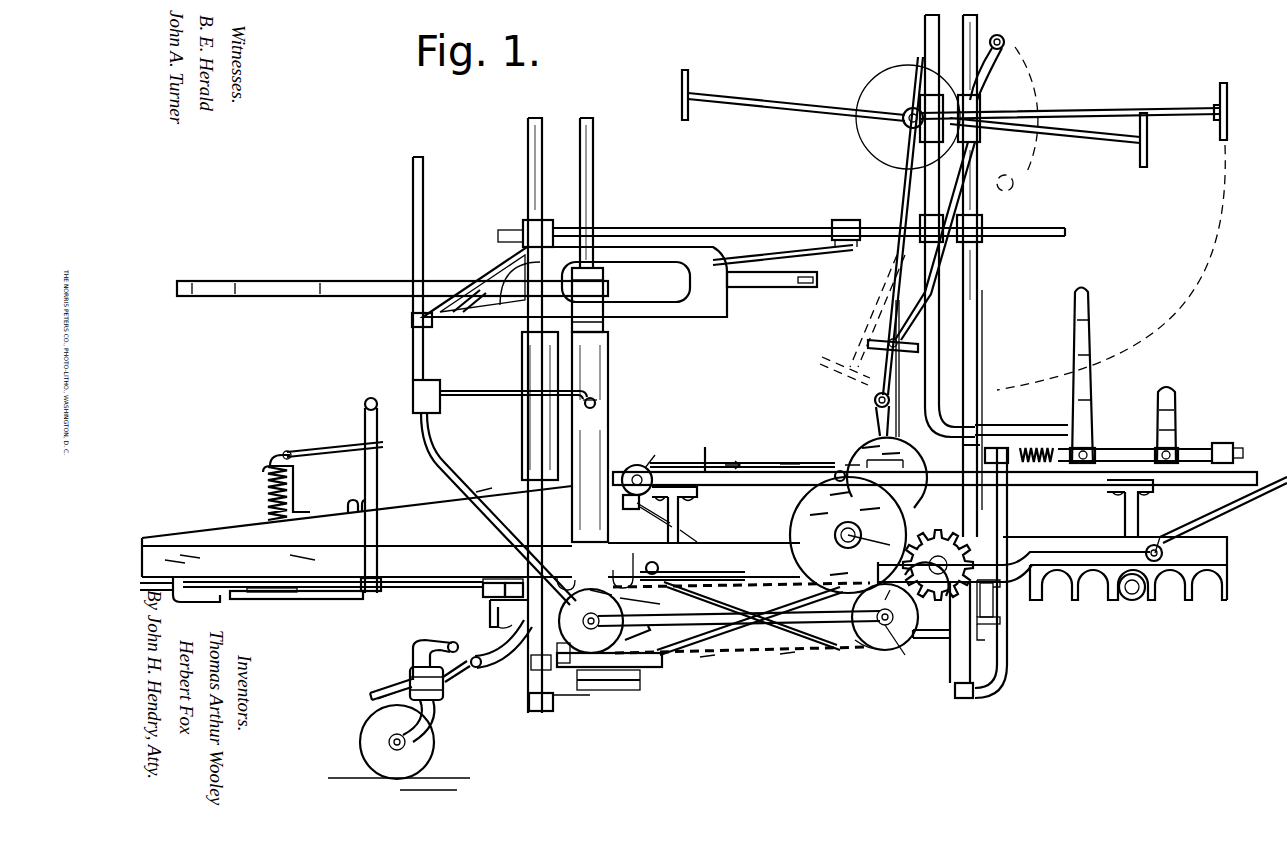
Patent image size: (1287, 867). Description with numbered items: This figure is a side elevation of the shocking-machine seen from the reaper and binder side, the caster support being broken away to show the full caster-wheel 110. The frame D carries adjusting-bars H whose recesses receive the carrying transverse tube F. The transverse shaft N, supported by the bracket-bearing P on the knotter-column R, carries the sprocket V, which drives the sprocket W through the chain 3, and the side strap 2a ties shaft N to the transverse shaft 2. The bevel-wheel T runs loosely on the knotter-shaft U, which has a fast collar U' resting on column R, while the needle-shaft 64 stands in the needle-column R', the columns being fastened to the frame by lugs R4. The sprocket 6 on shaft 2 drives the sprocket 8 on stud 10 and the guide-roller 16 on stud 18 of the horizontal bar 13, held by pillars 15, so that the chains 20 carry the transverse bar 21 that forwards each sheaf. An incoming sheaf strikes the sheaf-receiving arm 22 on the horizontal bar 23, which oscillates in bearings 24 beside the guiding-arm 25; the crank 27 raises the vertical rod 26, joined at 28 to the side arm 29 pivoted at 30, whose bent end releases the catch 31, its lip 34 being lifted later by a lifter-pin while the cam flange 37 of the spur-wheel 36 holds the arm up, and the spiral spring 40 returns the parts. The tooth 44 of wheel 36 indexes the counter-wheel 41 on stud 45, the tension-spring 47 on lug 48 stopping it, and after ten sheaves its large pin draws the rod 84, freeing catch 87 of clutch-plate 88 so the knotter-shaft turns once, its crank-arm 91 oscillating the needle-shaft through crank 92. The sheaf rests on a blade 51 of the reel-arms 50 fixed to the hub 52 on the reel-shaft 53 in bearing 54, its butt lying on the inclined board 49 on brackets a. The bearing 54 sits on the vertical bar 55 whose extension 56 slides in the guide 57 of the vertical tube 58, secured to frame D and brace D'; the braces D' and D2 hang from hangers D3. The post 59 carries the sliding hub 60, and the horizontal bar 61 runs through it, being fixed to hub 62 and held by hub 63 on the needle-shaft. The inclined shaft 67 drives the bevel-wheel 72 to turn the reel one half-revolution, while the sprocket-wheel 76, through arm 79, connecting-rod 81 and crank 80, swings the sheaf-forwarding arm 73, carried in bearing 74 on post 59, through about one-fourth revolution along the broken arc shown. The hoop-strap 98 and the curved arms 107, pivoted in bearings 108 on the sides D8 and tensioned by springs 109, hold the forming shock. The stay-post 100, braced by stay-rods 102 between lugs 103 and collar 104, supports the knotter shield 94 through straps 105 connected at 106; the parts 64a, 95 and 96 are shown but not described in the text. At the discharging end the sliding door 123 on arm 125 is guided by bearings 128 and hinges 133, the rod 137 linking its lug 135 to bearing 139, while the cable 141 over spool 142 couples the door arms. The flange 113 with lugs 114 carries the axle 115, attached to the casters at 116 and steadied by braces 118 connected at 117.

The right post 59 is at (977, 23).
The lower right post 58 is at (978, 330).
The rod 57 is at (978, 410).
The coupling 27 is at (962, 452).
The left post sleeve 54 is at (936, 96).
The pipe 55 is at (940, 331).
The bar 56 is at (1050, 427).
The sleeve 74 is at (977, 133).
The lower sleeve 62 is at (938, 242).
The lower sleeve 60 is at (982, 240).
The rod 61 is at (1055, 236).
The disk 72 is at (903, 68).
The hub 52 is at (905, 108).
The pin 53 is at (908, 127).
The arms 50 is at (780, 106).
The plates 51 is at (684, 122).
The plate 73 is at (1192, 113).
The pin and arm 80 is at (985, 62).
The rod 81 is at (840, 408).
The pivot 79 is at (878, 404).
The rod 67 is at (897, 379).
The disk 76 is at (900, 440).
The post 64 is at (528, 146).
The post U is at (596, 193).
The sleeve U' is at (605, 307).
The cylinder R is at (602, 437).
The cylinder R' is at (529, 406).
The sleeve 63 is at (525, 225).
The post and tube 100 is at (413, 207).
The box 104 is at (440, 412).
The rod 102 is at (513, 402).
The ring 103 is at (597, 402).
The bar 98 is at (400, 281).
The casting 94 is at (716, 313).
The brace 105 is at (477, 300).
The bracket 106 is at (412, 325).
The bar 64a is at (806, 288).
The rod 95 is at (765, 256).
The block 96 is at (860, 240).
The rod 107 is at (310, 450).
The spring 109 is at (268, 481).
The bracket 108 is at (293, 481).
The connector 139 is at (358, 500).
The rod 137 is at (377, 481).
The block 135 is at (365, 580).
The frame beam D is at (699, 543).
The frame part D8 is at (480, 497).
The frame bracket D3 is at (490, 580).
The frame bracket D' is at (1000, 628).
The bracket 37 is at (1000, 586).
The bearing R4 is at (565, 580).
The rod 123 is at (165, 590).
The hook 128 is at (210, 602).
The rail 133 is at (280, 600).
The rail 125 is at (335, 600).
The block 141 is at (480, 598).
The block 142 is at (505, 598).
The bracket 113 is at (528, 611).
The frame part D2 is at (490, 626).
The caster wheel 110 is at (362, 716).
The fork 117 is at (410, 677).
The link 116 is at (386, 685).
The rod 115 is at (370, 698).
The arm 114 is at (425, 650).
The pin link 118 is at (461, 665).
The disk N is at (582, 622).
The lever P is at (612, 597).
The lever V is at (640, 595).
The lever T is at (637, 636).
The bracket 87 is at (619, 662).
The bracket 88 is at (595, 666).
The plate 91 is at (585, 690).
The plate 92 is at (590, 698).
The pulley W is at (888, 648).
The pulley 2 is at (900, 649).
The pulley 6 is at (858, 655).
The pin 31 is at (884, 593).
The gear 34 is at (925, 638).
The belt 3 is at (741, 659).
The belt 2a is at (741, 613).
The braces 84 is at (750, 618).
The bar 47 is at (705, 572).
The ring 48 is at (658, 566).
The bar 13 is at (1265, 462).
The disk 8 is at (640, 468).
The pin 10 is at (659, 454).
The rod 20 is at (752, 463).
The rod 16 is at (830, 464).
The knuckle 18 is at (838, 470).
The bracket 21 is at (630, 510).
The pedestal 15 is at (680, 522).
The wheel 41 is at (792, 527).
The hub 45 is at (835, 533).
The wheel part 44 is at (905, 540).
The gear 36 is at (938, 555).
The arm 29 is at (1072, 552).
The foot 28 is at (975, 692).
The pipe 26 is at (1009, 525).
The block 24 is at (1005, 465).
The spring 40 is at (1045, 465).
The bar 23 is at (1128, 455).
The lever 22 is at (1075, 330).
The lever 25 is at (1176, 408).
The brace 49 is at (1270, 490).
The joint a is at (1205, 524).
The pivot 30 is at (1163, 553).
The rack H is at (1160, 598).
The nut F is at (1130, 600).